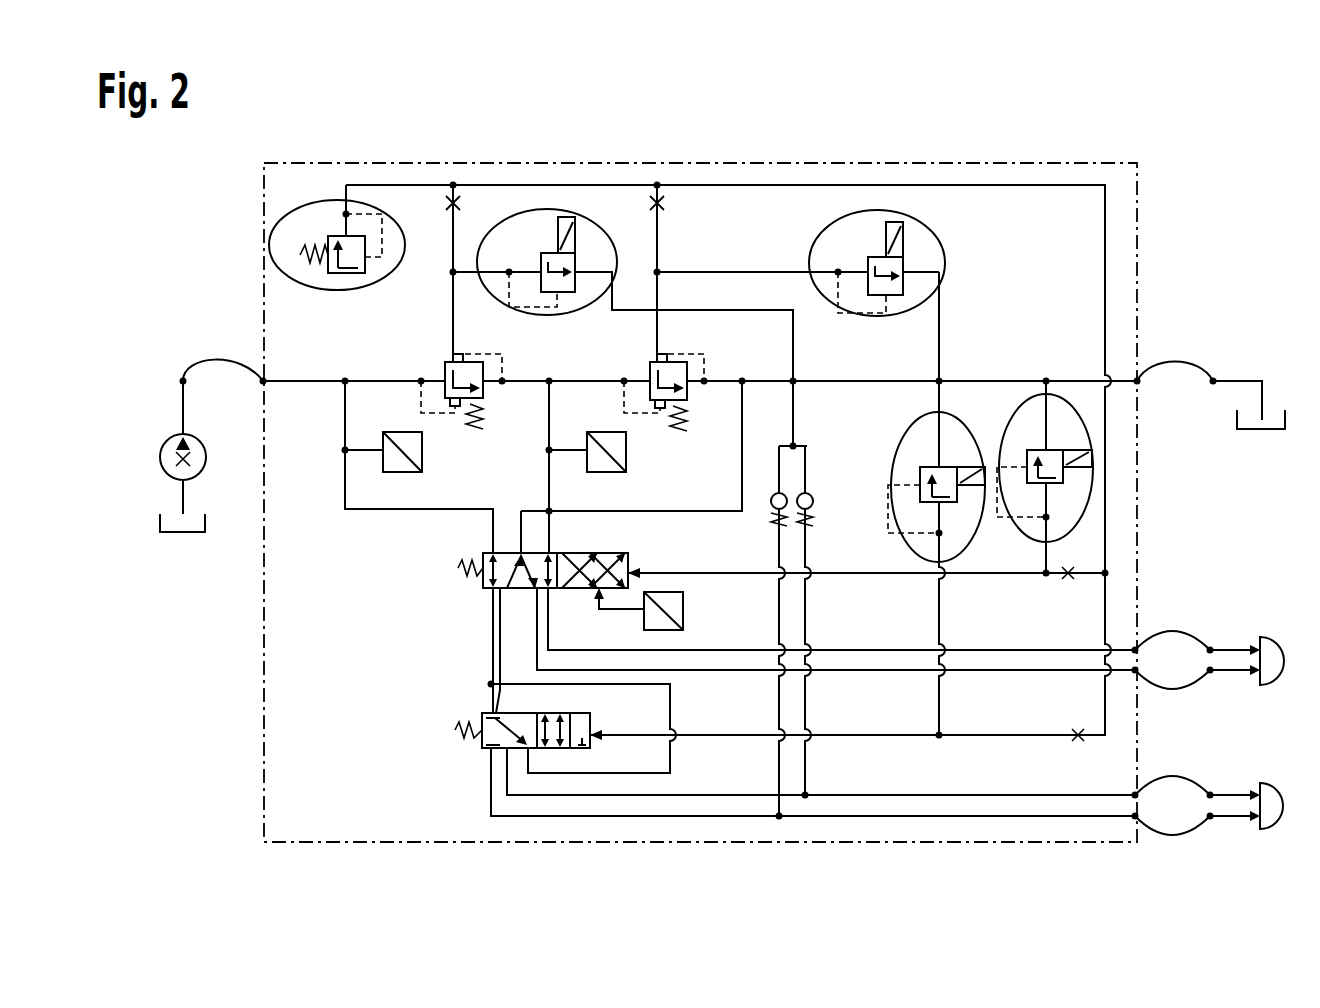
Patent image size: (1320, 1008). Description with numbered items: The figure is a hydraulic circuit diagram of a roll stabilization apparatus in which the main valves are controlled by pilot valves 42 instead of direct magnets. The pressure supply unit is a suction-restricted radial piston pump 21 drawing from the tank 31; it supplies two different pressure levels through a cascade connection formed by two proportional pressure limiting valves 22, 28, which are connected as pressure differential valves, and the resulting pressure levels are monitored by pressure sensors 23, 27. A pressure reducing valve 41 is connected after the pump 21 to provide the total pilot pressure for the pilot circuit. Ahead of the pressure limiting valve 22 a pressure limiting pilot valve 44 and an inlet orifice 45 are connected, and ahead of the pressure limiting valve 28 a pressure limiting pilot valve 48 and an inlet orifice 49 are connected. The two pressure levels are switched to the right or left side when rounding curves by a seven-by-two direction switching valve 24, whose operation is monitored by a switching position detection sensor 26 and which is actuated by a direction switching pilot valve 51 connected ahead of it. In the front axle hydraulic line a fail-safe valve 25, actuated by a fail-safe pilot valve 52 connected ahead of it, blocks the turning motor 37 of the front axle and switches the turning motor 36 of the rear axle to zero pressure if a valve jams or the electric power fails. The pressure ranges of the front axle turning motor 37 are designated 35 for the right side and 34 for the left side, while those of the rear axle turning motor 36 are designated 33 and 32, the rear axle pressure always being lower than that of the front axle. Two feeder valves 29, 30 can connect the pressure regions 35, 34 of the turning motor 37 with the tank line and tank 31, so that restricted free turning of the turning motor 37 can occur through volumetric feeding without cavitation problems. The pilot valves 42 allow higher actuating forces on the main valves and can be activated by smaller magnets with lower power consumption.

The radial piston pump 21 is at (160, 460).
The proportional pressure limiting valve 22 is at (448, 372).
The pressure sensor 23 is at (422, 464).
The direction switching valve 24 is at (483, 580).
The fail-safe valve 25 is at (482, 746).
The switching position detection sensor 26 is at (683, 612).
The pressure sensor 27 is at (626, 464).
The proportional pressure limiting valve 28 is at (652, 372).
The feeder valve 29 is at (771, 507).
The feeder valve 30 is at (813, 507).
The tank 31 is at (1268, 430).
The pressure range 32 is at (1137, 649).
The pressure range 33 is at (1137, 672).
The pressure range 34 is at (1134, 794).
The pressure range 35 is at (1137, 818).
The turning motor 36 is at (1270, 686).
The turning motor 37 is at (1270, 831).
The pressure reducing valve 41 is at (312, 194).
The pilot valve 42 is at (524, 202).
The pressure limiting pilot valve 44 is at (553, 256).
The inlet orifice 45 is at (455, 196).
The pressure limiting pilot valve 48 is at (877, 258).
The inlet orifice 49 is at (657, 200).
The direction switching pilot valve 51 is at (1055, 455).
The fail-safe pilot valve 52 is at (945, 470).